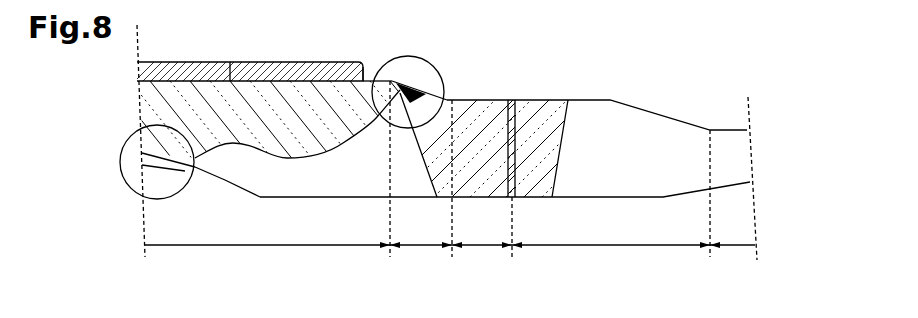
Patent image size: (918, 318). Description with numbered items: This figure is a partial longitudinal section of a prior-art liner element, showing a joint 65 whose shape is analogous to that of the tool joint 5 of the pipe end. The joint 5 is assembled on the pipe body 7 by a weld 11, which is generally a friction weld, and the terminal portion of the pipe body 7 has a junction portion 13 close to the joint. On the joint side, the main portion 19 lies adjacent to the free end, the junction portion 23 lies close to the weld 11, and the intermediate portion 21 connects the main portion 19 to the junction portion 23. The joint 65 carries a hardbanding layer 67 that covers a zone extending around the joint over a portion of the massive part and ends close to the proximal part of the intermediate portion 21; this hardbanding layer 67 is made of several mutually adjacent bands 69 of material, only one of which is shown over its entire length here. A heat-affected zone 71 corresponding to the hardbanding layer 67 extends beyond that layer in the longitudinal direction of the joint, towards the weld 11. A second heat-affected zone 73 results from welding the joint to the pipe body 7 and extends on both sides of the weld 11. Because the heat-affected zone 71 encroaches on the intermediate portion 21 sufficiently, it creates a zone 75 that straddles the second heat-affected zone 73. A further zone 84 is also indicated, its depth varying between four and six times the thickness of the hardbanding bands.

The joint 5 is at (293, 197).
The pipe body 7 is at (647, 107).
The weld 11 is at (513, 100).
The junction portion 13 is at (608, 248).
The main portion 19 is at (267, 245).
The intermediate portion 21 is at (423, 248).
The junction portion 23 is at (482, 248).
The joint 65 is at (735, 84).
The hardbanding layer 67 is at (340, 62).
The bands 69 is at (183, 62).
The heat-affected zone 71 is at (167, 108).
The second heat-affected zone 73 is at (540, 110).
The zone 75 is at (423, 56).
The zone 84 is at (120, 168).